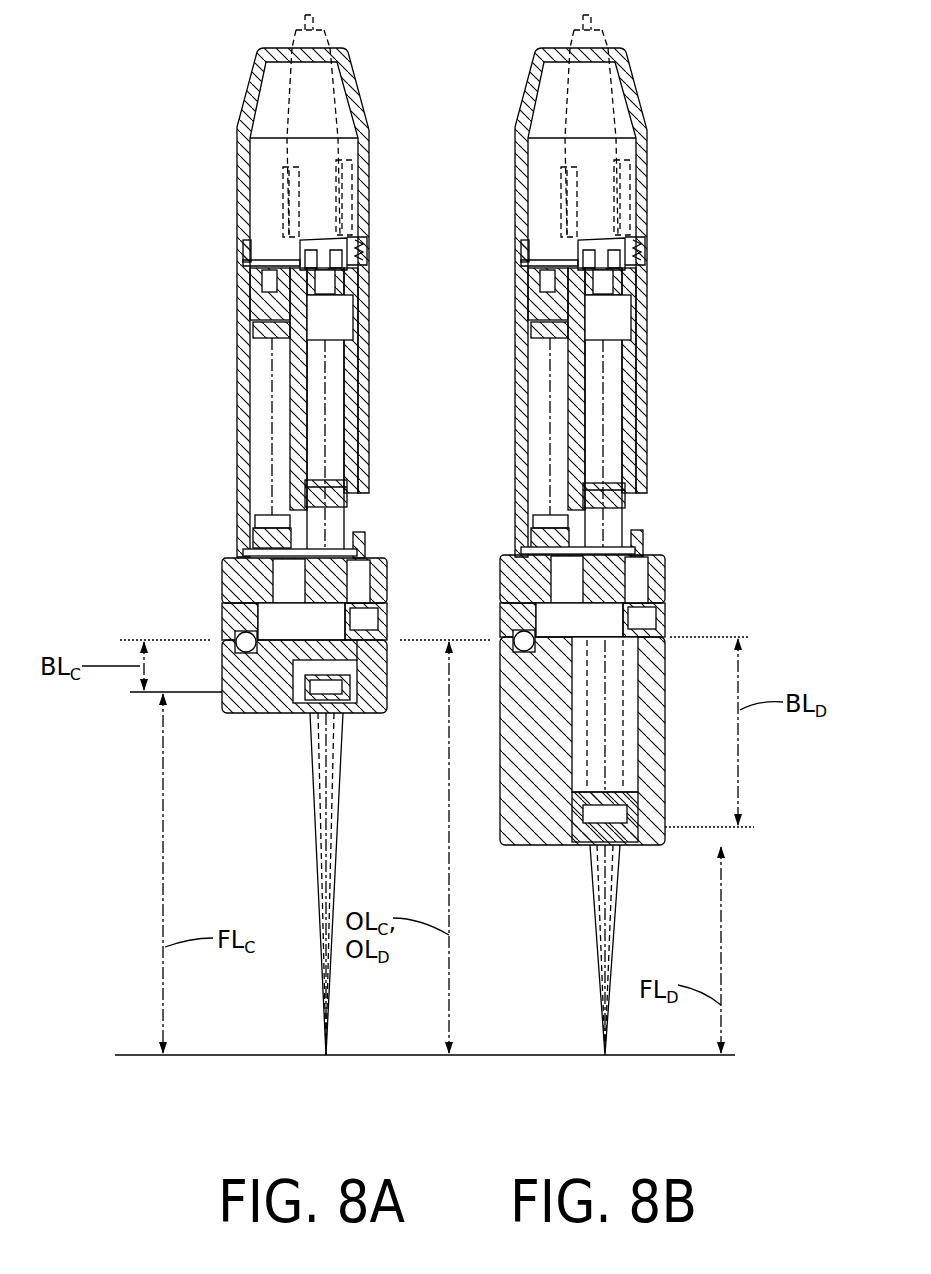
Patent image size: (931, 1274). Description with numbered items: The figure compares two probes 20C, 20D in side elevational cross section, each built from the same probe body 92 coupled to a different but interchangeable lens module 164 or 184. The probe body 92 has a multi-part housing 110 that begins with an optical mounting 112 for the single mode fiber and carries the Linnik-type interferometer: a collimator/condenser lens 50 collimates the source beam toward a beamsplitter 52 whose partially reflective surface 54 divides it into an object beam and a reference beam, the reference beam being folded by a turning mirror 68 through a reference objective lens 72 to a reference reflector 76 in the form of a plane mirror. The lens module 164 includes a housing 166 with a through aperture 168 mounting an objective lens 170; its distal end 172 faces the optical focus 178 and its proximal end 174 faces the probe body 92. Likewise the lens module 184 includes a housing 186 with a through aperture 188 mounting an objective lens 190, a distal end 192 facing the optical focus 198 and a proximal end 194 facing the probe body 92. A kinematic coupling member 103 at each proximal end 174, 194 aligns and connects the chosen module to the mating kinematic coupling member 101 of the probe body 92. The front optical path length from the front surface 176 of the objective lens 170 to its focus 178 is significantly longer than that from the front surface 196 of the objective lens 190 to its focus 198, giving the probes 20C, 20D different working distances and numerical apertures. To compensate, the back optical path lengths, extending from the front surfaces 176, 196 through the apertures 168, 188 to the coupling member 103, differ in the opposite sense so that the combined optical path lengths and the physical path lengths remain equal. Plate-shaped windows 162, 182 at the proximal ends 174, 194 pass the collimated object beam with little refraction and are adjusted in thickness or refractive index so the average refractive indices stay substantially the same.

In FIG. 8A, the probe 20C is at (278, 286).
In FIG. 8B, the probe 20D is at (664, 286).
In FIG. 8A, the probe body 92 is at (372, 365).
In FIG. 8B, the probe body 92 is at (638, 302).
In FIG. 8A, the optical mounting 112 is at (342, 282).
In FIG. 8B, the optical mounting 112 is at (678, 410).
In FIG. 8A, the reference reflector 76 is at (270, 340).
In FIG. 8B, the reference reflector 76 is at (515, 391).
In FIG. 8A, the multi-part housing 110 is at (243, 453).
In FIG. 8B, the multi-part housing 110 is at (662, 389).
In FIG. 8A, the collimator/condenser lens 50 is at (352, 500).
In FIG. 8B, the collimator/condenser lens 50 is at (657, 497).
In FIG. 8A, the partially reflective surface 54 is at (365, 548).
In FIG. 8B, the partially reflective surface 54 is at (692, 537).
In FIG. 8A, the reference objective lens 72 is at (237, 525).
In FIG. 8A, the turning mirror 68 is at (245, 553).
In FIG. 8A, the kinematic coupling member 101 is at (222, 600).
In FIG. 8B, the kinematic coupling member 101 is at (669, 582).
In FIG. 8A, the beamsplitter 52 is at (387, 596).
In FIG. 8B, the beamsplitter 52 is at (700, 574).
In FIG. 8A, the proximal end 174 is at (225, 622).
In FIG. 8A, the kinematic coupling member 103 is at (218, 636).
In FIG. 8B, the kinematic coupling member 103 is at (494, 679).
In FIG. 8A, the objective lens 170 is at (222, 667).
In FIG. 8A, the window 162 is at (388, 655).
In FIG. 8A, the lens module 164 is at (270, 704).
In FIG. 8A, the housing 166 is at (265, 713).
In FIG. 8A, the distal end 172 is at (283, 713).
In FIG. 8A, the through aperture 168 is at (358, 703).
In FIG. 8A, the front surface 176 is at (335, 800).
In FIG. 8A, the optical focus 178 is at (326, 1055).
In FIG. 8B, the proximal end 194 is at (636, 620).
In FIG. 8B, the window 182 is at (657, 714).
In FIG. 8B, the lens module 184 is at (657, 741).
In FIG. 8B, the objective lens 190 is at (654, 806).
In FIG. 8B, the housing 186 is at (491, 861).
In FIG. 8B, the through aperture 188 is at (549, 871).
In FIG. 8B, the distal end 192 is at (683, 888).
In FIG. 8B, the front surface 196 is at (558, 950).
In FIG. 8B, the optical focus 198 is at (551, 1023).